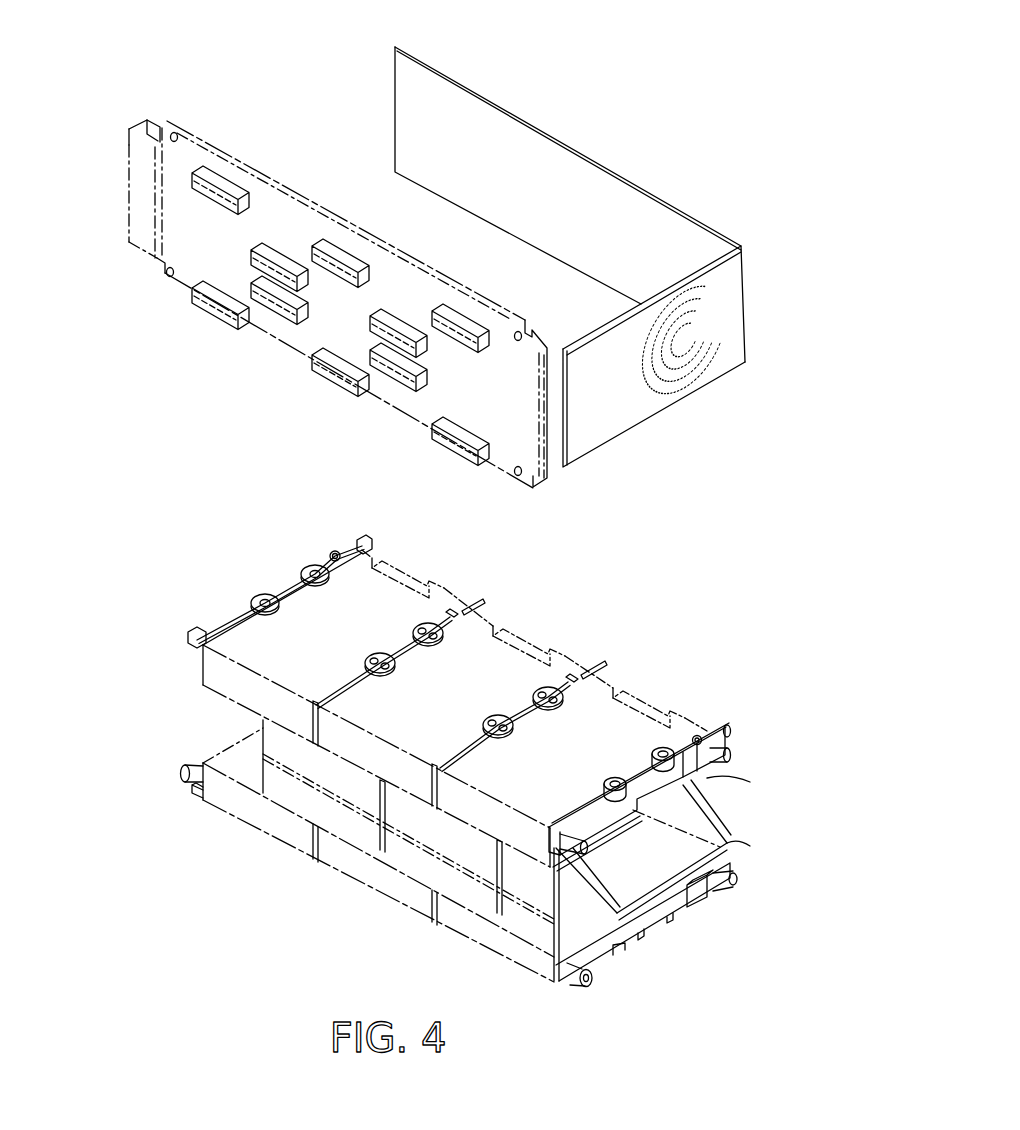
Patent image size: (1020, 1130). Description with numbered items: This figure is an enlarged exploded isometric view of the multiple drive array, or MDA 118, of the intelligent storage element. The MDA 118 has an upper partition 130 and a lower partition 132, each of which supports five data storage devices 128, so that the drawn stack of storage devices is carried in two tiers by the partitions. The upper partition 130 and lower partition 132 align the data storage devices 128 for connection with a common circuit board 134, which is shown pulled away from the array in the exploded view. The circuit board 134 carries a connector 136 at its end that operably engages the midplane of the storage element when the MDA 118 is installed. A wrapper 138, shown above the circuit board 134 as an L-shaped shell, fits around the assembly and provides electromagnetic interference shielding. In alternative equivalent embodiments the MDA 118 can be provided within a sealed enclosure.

The MDA 118 is at (628, 48).
The data storage devices 128 is at (292, 607).
The upper partition 130 is at (707, 778).
The lower partition 132 is at (727, 852).
The circuit board 134 is at (175, 126).
The connector 136 is at (150, 131).
The wrapper 138 is at (447, 76).